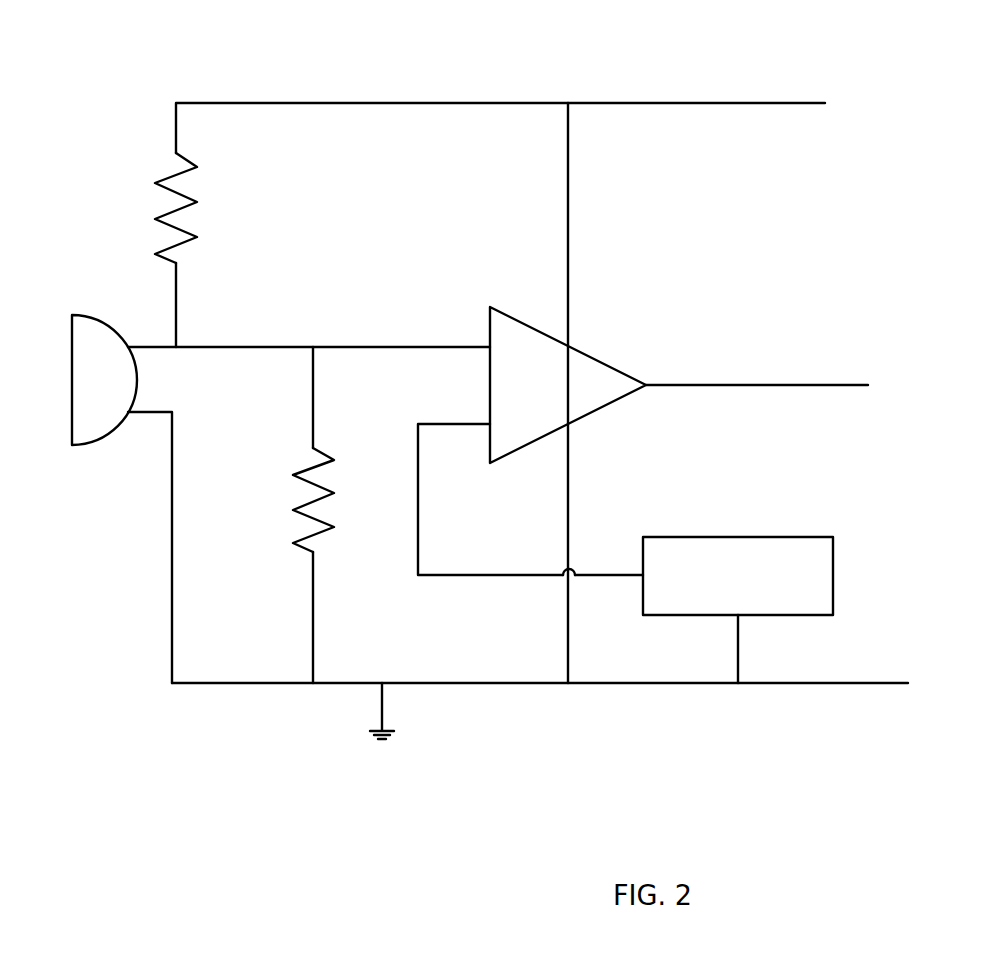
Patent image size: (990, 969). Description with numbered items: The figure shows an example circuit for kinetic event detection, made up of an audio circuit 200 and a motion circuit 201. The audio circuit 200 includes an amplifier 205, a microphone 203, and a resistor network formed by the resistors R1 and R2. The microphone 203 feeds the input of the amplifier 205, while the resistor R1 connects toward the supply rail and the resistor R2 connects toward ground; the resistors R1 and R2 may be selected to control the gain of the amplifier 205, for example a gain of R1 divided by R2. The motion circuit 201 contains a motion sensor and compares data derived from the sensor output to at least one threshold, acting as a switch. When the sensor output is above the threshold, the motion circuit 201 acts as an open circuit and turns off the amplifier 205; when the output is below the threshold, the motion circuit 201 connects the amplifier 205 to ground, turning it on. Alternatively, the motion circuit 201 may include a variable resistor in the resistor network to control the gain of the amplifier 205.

The audio circuit 200 is at (141, 67).
The resistor R1 is at (159, 185).
The resistor R2 is at (296, 473).
The microphone 203 is at (83, 314).
The amplifier 205 is at (493, 306).
The motion circuit 201 is at (684, 537).